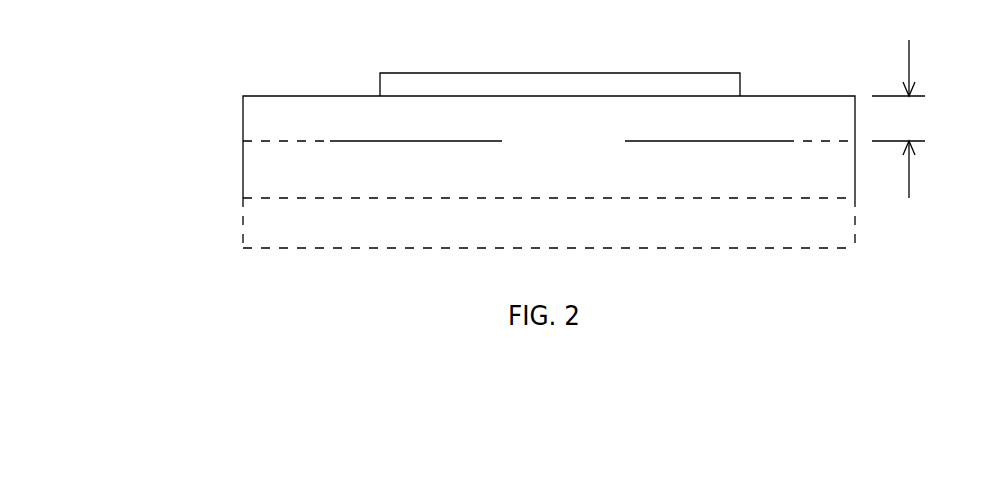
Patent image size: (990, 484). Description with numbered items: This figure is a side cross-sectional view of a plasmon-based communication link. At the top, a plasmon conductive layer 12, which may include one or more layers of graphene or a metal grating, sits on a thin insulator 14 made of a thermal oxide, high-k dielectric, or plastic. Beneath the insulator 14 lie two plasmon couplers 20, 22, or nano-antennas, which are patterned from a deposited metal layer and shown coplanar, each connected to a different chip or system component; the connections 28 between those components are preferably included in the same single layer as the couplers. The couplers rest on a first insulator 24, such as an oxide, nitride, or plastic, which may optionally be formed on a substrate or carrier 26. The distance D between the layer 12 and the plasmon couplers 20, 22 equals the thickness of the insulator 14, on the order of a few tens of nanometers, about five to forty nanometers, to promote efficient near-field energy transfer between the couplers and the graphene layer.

The plasmon conductive layer 12 is at (525, 73).
The thin insulator 14 is at (243, 115).
The plasmon coupler 20 is at (371, 141).
The plasmon coupler 22 is at (745, 141).
The first insulator 24 is at (243, 168).
The substrate 26 is at (243, 232).
The connections 28 is at (284, 141).
The thickness D is at (898, 119).